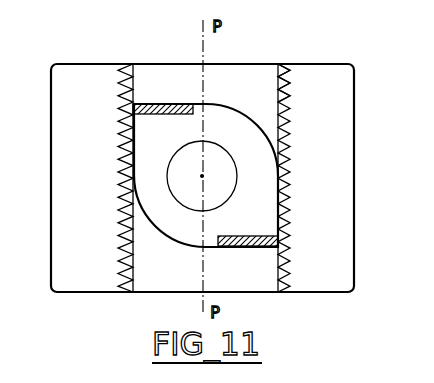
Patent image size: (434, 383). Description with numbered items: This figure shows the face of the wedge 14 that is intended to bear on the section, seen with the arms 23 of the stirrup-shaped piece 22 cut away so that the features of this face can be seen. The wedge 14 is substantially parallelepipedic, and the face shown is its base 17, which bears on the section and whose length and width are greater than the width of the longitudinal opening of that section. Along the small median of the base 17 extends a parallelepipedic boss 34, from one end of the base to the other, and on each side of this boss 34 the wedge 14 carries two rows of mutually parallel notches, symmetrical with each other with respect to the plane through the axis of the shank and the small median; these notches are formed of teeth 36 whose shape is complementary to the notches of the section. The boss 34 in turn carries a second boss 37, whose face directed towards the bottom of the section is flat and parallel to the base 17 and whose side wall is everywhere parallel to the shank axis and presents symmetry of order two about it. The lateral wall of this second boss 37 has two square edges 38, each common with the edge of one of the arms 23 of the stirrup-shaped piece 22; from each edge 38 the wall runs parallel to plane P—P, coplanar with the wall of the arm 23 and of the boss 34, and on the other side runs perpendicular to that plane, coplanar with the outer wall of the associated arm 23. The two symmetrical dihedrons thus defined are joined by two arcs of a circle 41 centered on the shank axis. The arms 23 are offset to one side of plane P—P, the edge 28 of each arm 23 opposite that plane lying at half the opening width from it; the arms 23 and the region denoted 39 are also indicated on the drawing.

The wedge 14 is at (51, 200).
The base 17 is at (327, 193).
The stirrup-shaped piece 22 is at (203, 177).
The arms 23 is at (168, 103).
The edge 28 is at (126, 112).
The parallelepipedic boss 34 is at (240, 85).
The teeth 36 is at (287, 67).
The second boss 37 is at (165, 203).
The edges 38 is at (132, 100).
The tooth gap 39 is at (127, 217).
The arcs of a circle 41 is at (137, 293).